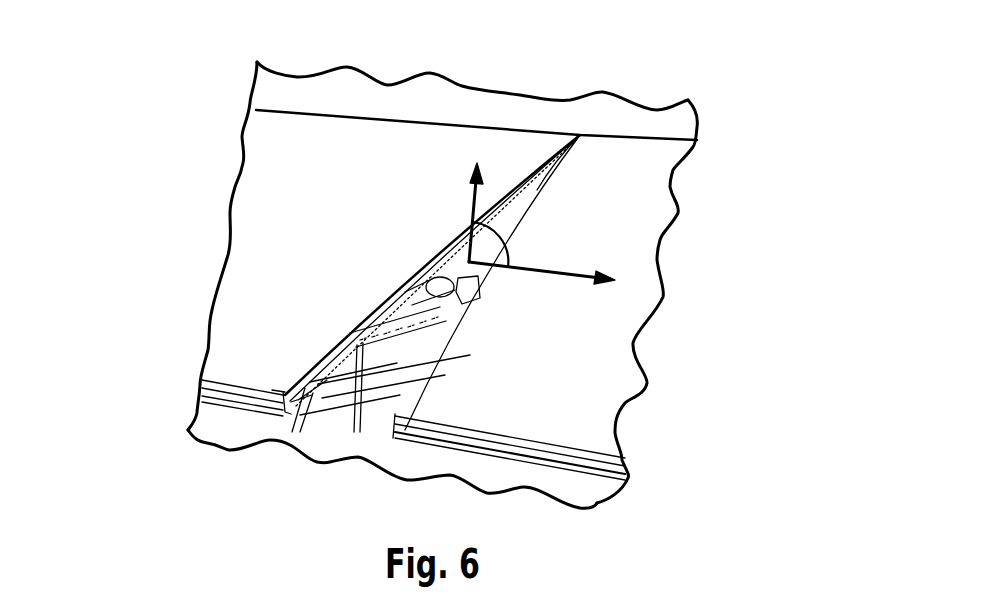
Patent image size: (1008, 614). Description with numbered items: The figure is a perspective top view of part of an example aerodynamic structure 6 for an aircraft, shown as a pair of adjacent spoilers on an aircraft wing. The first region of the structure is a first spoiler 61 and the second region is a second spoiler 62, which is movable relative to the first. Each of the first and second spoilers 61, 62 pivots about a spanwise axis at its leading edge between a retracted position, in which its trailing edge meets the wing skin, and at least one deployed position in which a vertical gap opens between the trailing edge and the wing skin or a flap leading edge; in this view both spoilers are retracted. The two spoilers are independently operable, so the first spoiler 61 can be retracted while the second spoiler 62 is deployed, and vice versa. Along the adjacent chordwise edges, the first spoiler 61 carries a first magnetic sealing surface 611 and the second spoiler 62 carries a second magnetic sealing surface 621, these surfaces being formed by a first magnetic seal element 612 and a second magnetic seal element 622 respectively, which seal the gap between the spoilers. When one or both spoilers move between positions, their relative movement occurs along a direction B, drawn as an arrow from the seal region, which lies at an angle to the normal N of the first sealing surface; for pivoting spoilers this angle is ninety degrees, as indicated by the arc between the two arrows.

The aerodynamic structure 6 is at (542, 70).
The first spoiler 61 is at (303, 282).
The second spoiler 62 is at (562, 350).
The first magnetic sealing surface 611 is at (530, 175).
The first magnetic seal element 612 is at (458, 244).
The second magnetic sealing surface 621 is at (546, 170).
The second magnetic seal element 622 is at (512, 218).
The direction of relative movement B is at (472, 192).
The normal of the first sealing surface N is at (568, 277).